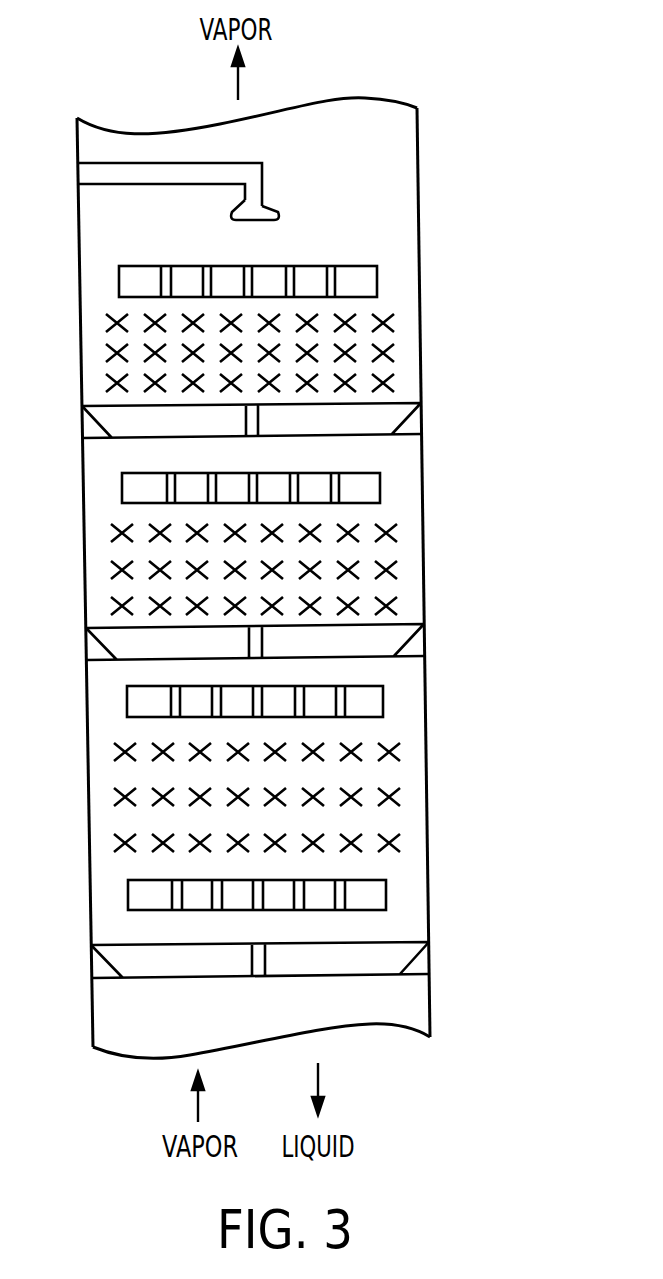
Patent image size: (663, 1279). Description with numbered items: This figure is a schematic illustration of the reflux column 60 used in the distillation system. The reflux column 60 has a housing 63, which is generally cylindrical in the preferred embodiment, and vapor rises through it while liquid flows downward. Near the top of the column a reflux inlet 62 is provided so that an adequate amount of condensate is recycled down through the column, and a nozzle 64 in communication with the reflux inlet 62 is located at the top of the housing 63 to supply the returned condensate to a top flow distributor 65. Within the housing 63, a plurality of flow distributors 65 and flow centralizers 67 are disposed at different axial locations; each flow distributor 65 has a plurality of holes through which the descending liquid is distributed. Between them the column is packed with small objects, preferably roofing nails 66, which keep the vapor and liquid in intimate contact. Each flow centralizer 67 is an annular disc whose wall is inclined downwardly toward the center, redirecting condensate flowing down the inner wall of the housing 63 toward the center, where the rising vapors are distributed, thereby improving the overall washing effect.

The reflux column 60 is at (445, 90).
The reflux inlet 62 is at (77, 176).
The housing 63 is at (427, 748).
The nozzle 64 is at (262, 172).
The flow distributor 65 is at (377, 283).
The roofing nails 66 is at (352, 350).
The flow centralizer 67 is at (422, 418).